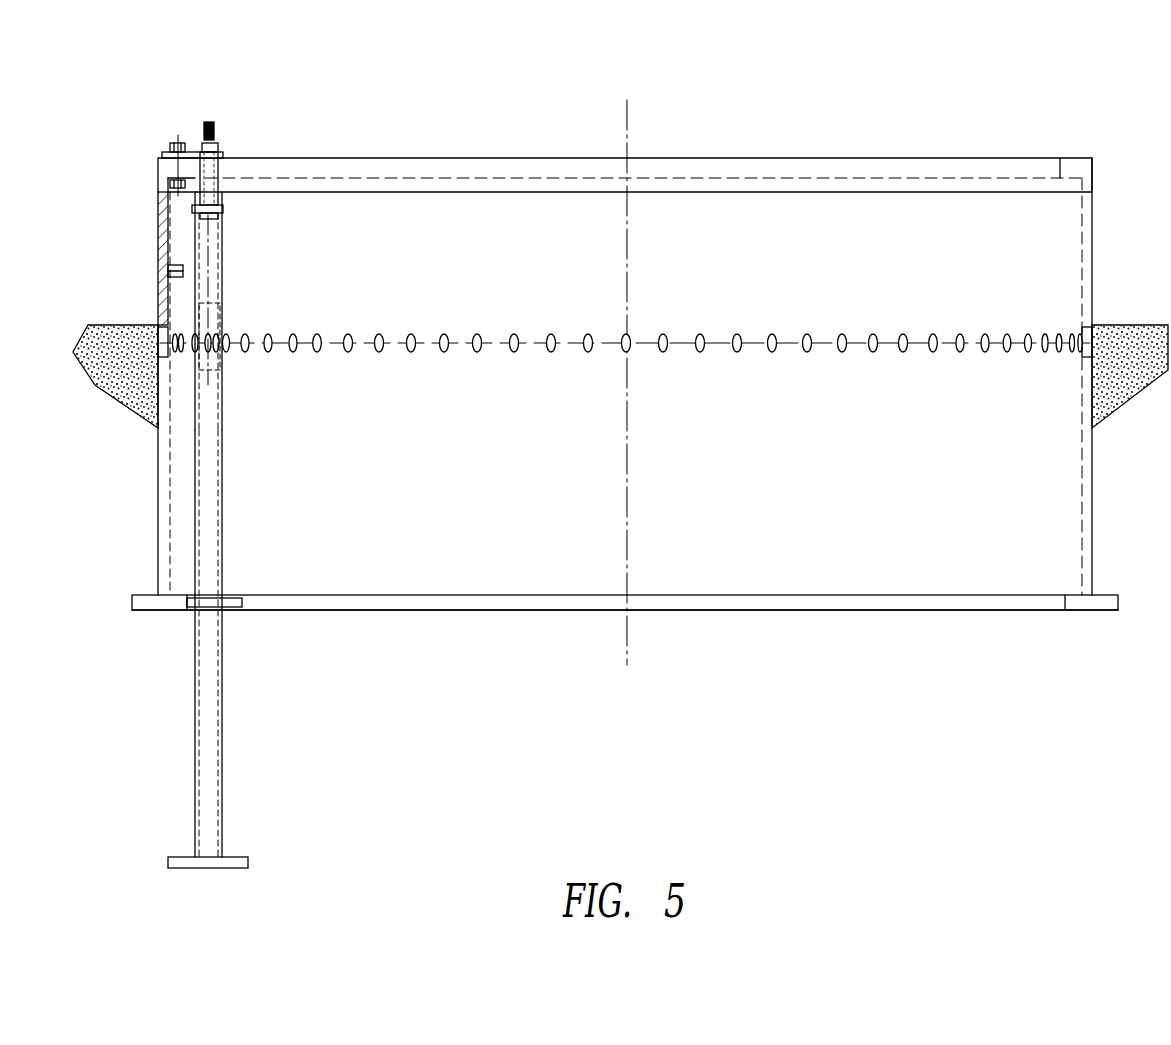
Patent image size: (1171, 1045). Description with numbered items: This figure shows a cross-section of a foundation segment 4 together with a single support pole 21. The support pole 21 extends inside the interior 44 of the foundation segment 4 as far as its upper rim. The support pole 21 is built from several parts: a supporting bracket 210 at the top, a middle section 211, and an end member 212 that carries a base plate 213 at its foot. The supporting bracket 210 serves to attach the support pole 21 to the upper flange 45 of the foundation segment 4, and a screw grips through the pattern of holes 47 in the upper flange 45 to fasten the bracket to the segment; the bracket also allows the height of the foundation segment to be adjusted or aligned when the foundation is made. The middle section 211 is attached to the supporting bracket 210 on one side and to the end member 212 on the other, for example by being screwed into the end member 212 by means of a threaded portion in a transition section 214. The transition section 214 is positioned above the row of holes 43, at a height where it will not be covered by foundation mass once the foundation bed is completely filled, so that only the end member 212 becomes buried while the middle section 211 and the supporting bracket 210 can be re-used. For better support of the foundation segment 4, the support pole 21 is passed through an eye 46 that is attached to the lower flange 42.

The foundation segment 4 is at (1093, 248).
The support pole 21 is at (257, 530).
The supporting bracket 210 is at (242, 170).
The middle section 211 is at (218, 253).
The end member 212 is at (218, 542).
The base plate 213 is at (250, 862).
The transition section 214 is at (220, 314).
The lower flange 42 is at (970, 600).
The row of holes 43 is at (903, 335).
The interior 44 is at (501, 210).
The upper flange 45 is at (834, 175).
The eye 46 is at (242, 601).
The pattern of holes 47 is at (820, 614).